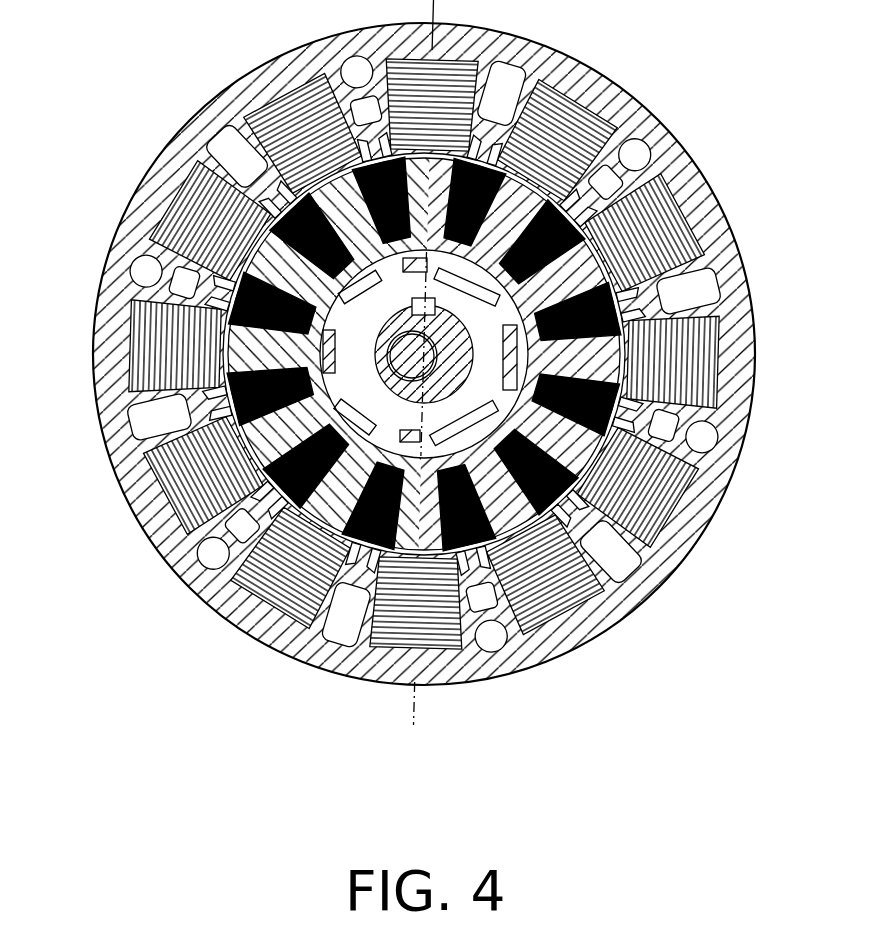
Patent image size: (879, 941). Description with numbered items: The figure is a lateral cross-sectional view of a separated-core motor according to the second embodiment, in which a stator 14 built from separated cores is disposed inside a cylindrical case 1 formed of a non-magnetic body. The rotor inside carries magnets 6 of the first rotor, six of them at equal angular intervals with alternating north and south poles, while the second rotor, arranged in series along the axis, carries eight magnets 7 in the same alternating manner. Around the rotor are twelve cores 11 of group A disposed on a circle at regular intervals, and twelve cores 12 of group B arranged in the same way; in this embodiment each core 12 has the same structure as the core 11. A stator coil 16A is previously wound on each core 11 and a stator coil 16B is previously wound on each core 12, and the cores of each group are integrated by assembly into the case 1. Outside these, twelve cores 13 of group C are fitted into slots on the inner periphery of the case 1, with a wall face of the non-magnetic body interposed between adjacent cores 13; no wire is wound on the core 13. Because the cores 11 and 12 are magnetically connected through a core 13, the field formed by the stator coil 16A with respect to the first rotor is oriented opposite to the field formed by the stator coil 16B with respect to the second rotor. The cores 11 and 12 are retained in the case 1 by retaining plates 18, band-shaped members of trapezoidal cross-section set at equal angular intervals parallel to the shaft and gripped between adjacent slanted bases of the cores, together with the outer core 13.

The case 1 is at (610, 608).
The magnets 6 is at (550, 620).
The magnets 7 is at (130, 447).
The core 11 is at (665, 503).
The core 12 is at (280, 617).
The core 13 is at (397, 633).
The stator 14 is at (424, 296).
The stator coil 16A is at (620, 100).
The stator coil 16B is at (243, 117).
The retaining plates 18 is at (665, 188).